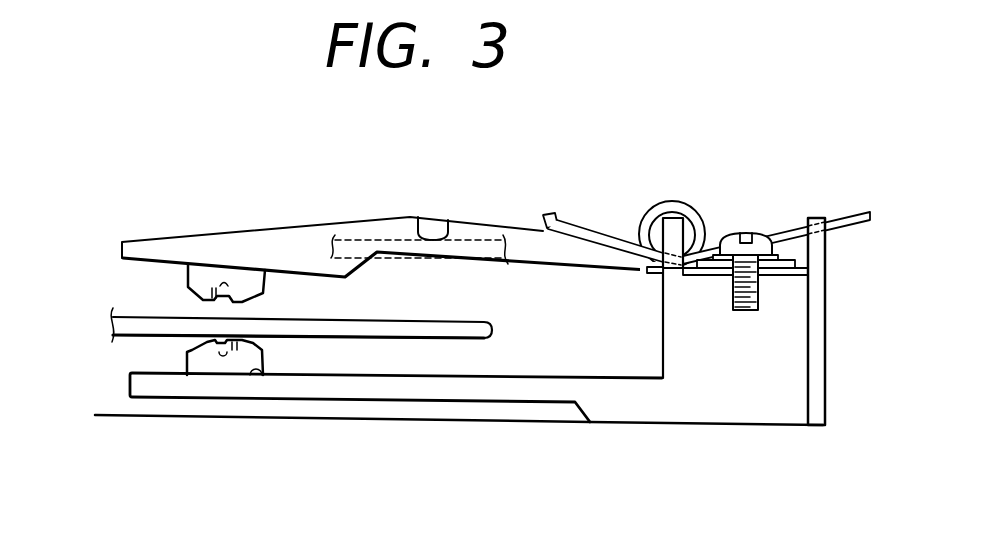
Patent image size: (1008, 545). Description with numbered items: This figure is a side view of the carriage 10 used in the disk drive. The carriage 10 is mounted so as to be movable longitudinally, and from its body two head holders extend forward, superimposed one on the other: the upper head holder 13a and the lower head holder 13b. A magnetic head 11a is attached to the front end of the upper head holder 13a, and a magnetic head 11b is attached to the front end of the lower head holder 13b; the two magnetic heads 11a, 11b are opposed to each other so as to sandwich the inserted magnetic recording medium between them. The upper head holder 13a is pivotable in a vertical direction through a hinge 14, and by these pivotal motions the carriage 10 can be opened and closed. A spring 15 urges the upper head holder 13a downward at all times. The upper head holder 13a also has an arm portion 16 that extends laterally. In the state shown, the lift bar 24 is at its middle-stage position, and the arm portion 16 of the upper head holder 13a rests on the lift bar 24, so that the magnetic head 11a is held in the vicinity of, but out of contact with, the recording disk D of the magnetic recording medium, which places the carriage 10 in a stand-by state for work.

The upper head holder 13a is at (137, 240).
The magnetic head 11a is at (242, 277).
The lift bar 24 is at (392, 240).
The arm portion 16 is at (433, 228).
The spring 15 is at (642, 213).
The hinge 14 is at (652, 277).
The recording disk D is at (494, 330).
The carriage 10 is at (808, 348).
The lower head holder 13b is at (130, 387).
The magnetic head 11b is at (222, 367).